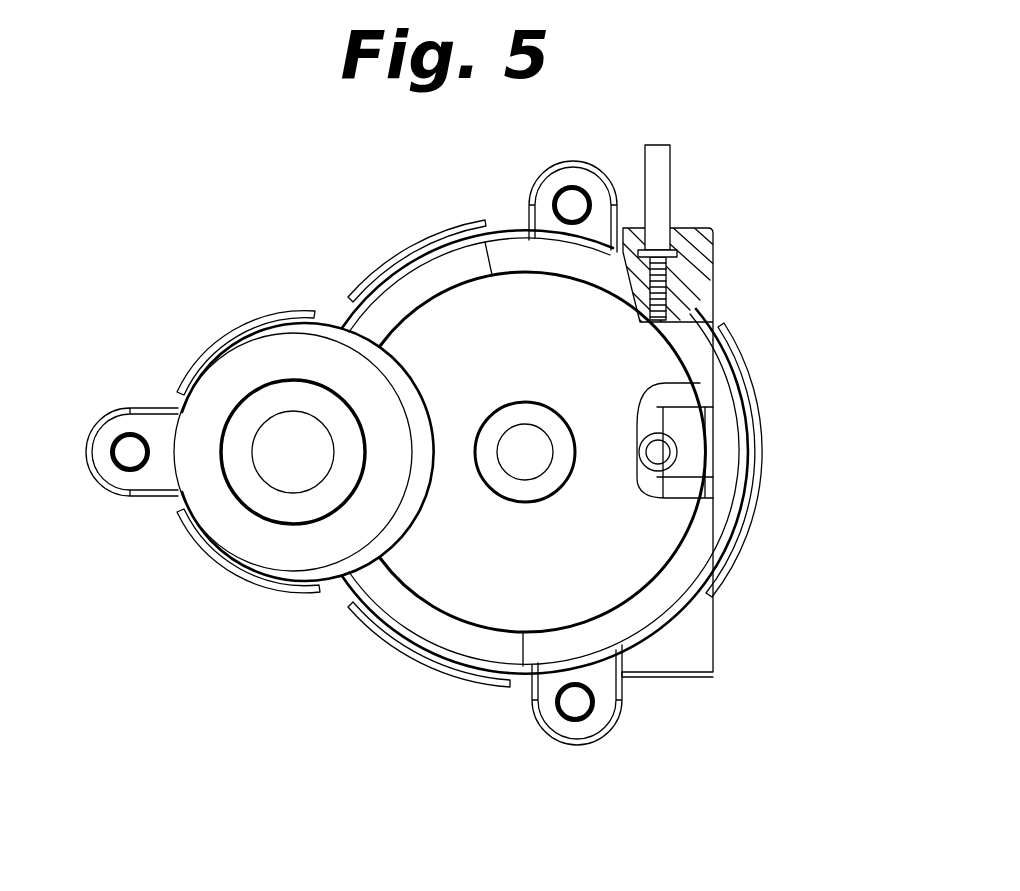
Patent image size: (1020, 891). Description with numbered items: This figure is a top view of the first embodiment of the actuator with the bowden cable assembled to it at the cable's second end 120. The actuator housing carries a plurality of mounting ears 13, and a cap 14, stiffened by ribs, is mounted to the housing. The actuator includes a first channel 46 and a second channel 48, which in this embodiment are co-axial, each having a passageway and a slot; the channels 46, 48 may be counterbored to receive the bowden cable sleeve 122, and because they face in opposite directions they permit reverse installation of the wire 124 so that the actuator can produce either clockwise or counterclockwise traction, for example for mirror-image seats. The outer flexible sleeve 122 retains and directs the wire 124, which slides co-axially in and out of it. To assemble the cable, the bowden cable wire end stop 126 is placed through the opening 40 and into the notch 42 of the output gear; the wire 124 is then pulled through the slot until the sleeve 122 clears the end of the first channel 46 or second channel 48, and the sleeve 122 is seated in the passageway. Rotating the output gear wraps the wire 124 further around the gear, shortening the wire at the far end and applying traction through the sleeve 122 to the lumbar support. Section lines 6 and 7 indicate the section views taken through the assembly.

The section line 6- 6 is at (293, 452).
The section line 7- 7 is at (788, 412).
The mounting ears 13 is at (122, 498).
The cap 14 is at (236, 592).
The opening 40 is at (772, 499).
The notch 42 is at (686, 488).
The first channel 46 is at (713, 243).
The second channel 48 is at (713, 640).
The second end 120 is at (768, 154).
The sleeve 122 is at (648, 163).
The wire 124 is at (702, 276).
The bowden cable wire end stop 126 is at (700, 382).